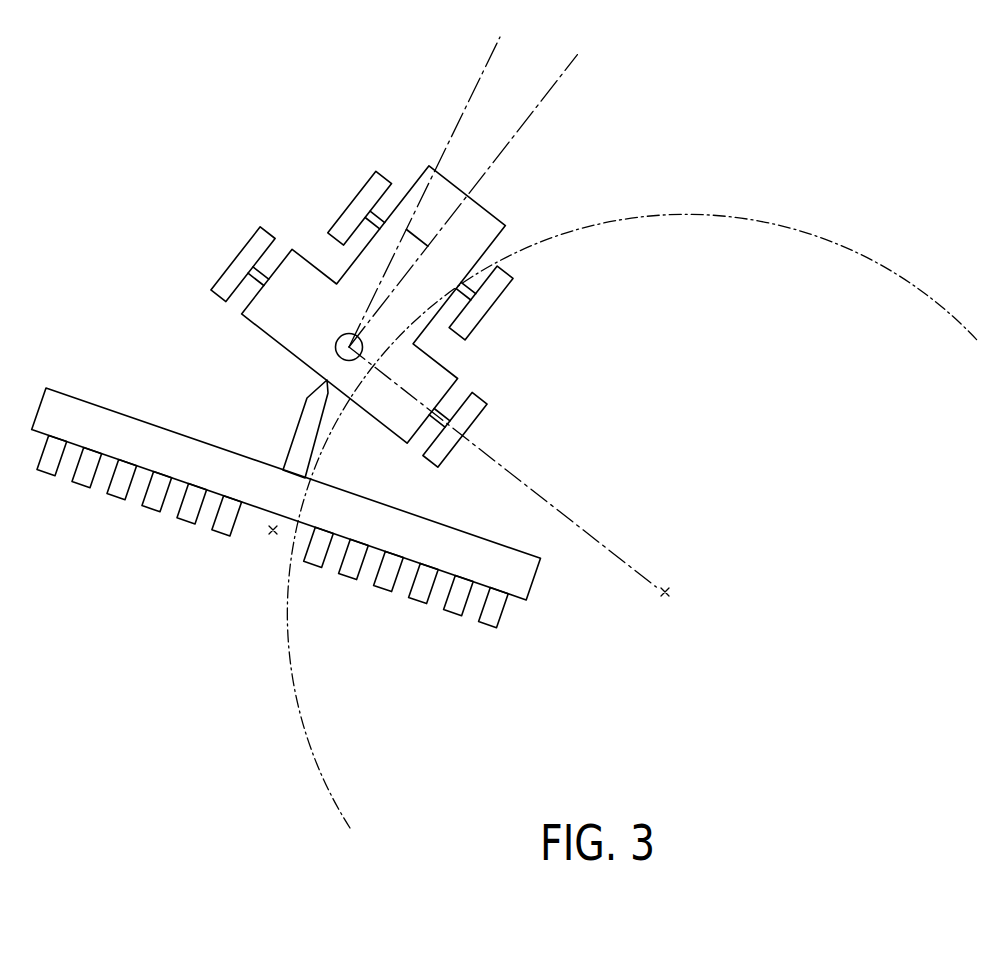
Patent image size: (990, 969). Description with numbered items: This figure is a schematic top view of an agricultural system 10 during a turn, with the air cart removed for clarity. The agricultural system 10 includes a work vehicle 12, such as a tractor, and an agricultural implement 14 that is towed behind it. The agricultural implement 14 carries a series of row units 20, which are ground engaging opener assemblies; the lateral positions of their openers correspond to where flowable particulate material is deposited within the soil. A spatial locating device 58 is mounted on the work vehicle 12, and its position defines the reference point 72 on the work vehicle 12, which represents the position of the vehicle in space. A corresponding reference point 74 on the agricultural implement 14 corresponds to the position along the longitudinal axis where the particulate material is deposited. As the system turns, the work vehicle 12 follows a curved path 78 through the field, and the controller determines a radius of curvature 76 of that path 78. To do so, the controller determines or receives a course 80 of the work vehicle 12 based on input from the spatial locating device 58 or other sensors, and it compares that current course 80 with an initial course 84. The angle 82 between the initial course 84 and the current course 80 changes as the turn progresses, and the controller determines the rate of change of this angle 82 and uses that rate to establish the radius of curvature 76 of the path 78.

The agricultural system 10 is at (340, 137).
The work vehicle 12 is at (419, 178).
The agricultural implement 14 is at (87, 402).
The row unit 20 is at (45, 476).
The spatial locating device 58 is at (338, 337).
The reference point 72 is at (323, 371).
The reference point 74 is at (267, 533).
The radius of curvature 76 is at (527, 484).
The path 78 is at (611, 192).
The course 80 is at (562, 72).
The angle 82 is at (420, 237).
The initial course 84 is at (485, 68).